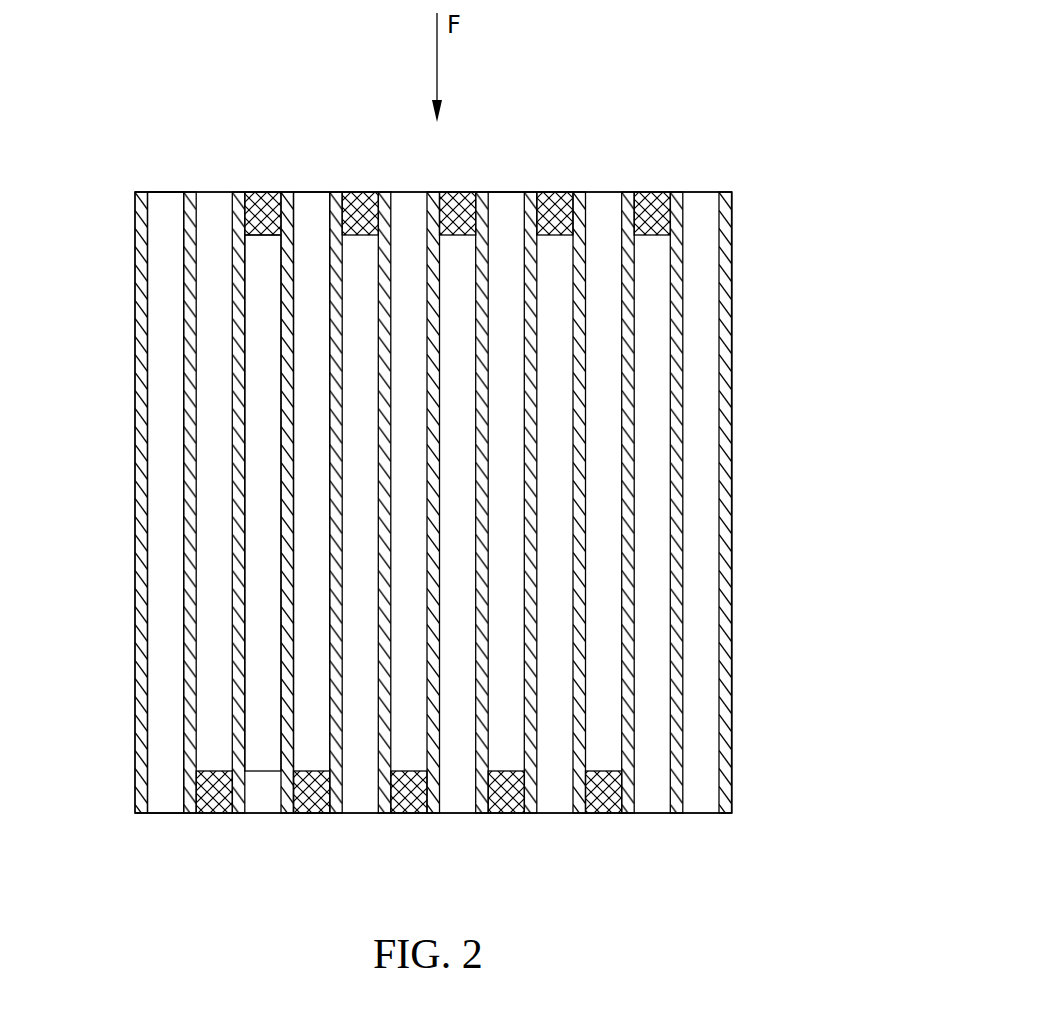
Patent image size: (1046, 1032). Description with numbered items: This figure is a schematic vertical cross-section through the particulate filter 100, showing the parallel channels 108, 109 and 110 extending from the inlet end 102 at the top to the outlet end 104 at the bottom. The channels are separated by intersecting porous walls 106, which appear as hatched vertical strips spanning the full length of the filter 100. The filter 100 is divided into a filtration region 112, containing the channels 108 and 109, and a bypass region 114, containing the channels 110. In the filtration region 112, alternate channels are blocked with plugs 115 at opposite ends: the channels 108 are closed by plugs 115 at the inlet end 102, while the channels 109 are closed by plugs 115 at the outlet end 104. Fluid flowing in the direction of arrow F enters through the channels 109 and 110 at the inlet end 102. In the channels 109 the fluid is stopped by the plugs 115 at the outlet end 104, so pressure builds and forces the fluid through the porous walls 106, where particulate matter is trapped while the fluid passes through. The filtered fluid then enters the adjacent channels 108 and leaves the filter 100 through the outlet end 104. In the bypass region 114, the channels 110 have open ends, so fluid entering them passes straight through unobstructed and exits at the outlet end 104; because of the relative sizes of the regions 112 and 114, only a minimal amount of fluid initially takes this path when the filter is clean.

The particulate filter 100 is at (728, 96).
The inlet end 102 is at (675, 193).
The outlet end 104 is at (645, 814).
The porous walls 106 is at (233, 467).
The channels 108 is at (263, 260).
The channels 109 is at (307, 202).
The channels 110 is at (160, 284).
The filtration region 112 is at (501, 192).
The bypass region 114 is at (165, 192).
The plugs 115 is at (650, 197).